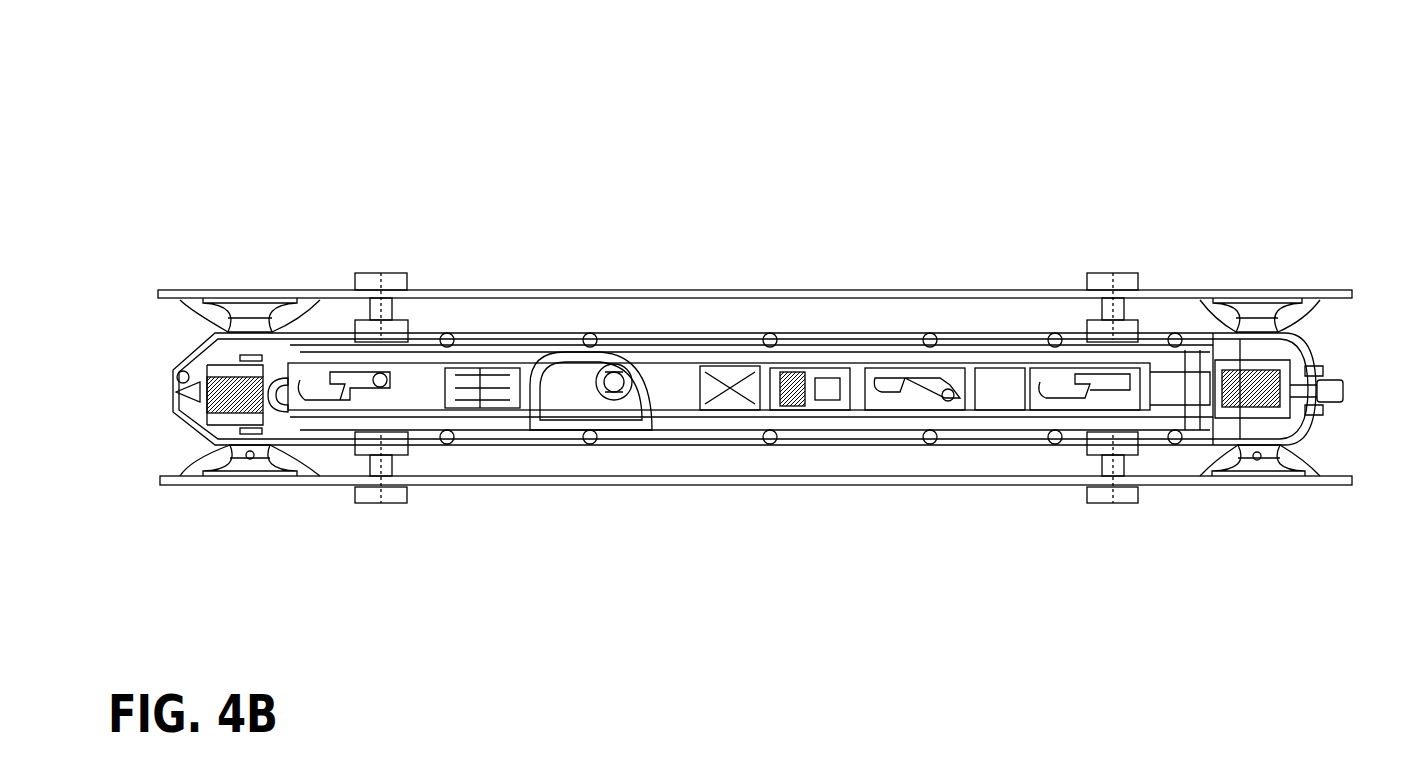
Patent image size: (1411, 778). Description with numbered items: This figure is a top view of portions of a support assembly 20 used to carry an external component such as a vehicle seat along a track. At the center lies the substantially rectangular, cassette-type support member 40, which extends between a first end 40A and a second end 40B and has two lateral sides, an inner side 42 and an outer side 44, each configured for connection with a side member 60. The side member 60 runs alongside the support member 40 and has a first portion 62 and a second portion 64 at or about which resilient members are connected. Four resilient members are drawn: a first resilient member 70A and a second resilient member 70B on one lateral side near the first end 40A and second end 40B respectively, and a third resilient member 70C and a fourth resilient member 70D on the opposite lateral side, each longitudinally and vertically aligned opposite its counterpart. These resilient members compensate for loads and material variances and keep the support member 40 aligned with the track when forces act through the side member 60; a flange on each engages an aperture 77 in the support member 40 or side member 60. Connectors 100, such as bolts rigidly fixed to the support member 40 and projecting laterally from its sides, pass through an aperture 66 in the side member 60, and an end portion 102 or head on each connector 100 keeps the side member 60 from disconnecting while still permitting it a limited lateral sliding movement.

The support assembly 20 is at (492, 124).
The side member 60 is at (120, 292).
The first portion of the side member 62 is at (759, 297).
The second portion of the side member 64 is at (832, 482).
The first resilient member 70A is at (252, 300).
The second resilient member 70B is at (1244, 300).
The third resilient member 70C is at (265, 458).
The fourth resilient member 70D is at (1270, 462).
The aperture 77 is at (187, 300).
The connector 100 is at (405, 330).
The end portion 102 is at (378, 288).
The aperture of the side member 66 is at (395, 300).
The support member 40 is at (812, 318).
The inner side 42 is at (996, 338).
The outer side 44 is at (615, 445).
The first end of the support member 40A is at (128, 392).
The second end of the support member 40B is at (1343, 422).